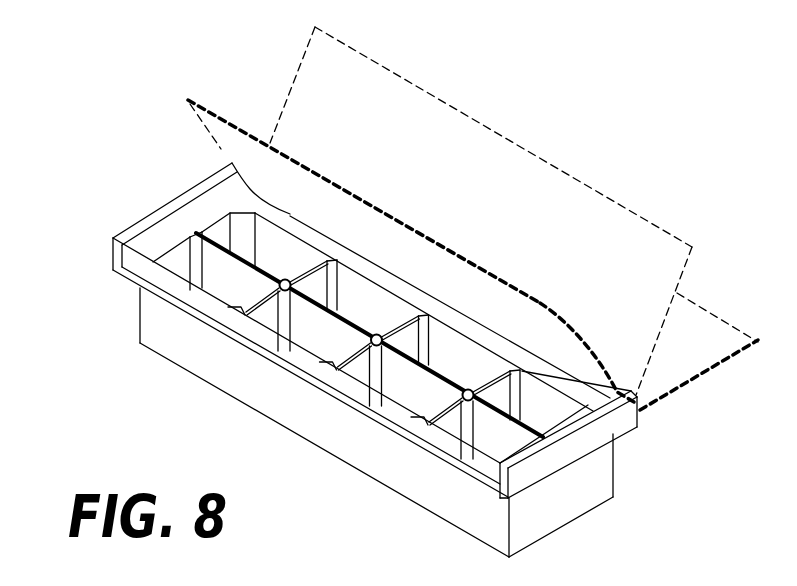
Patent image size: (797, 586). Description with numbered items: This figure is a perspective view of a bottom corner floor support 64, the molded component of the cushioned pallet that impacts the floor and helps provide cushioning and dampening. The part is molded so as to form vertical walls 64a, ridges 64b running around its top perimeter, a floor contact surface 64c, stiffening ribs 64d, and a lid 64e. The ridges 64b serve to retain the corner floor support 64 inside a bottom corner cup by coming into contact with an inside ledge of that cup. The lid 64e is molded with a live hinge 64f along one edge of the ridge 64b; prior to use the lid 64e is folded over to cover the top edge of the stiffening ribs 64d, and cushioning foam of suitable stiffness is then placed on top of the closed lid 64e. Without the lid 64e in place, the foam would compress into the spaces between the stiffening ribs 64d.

The bottom corner floor support 64 is at (151, 395).
The vertical walls 64a is at (613, 485).
The ridges 64b is at (462, 328).
The floor contact surface 64c is at (232, 394).
The stiffening ribs 64d is at (527, 430).
The lid 64e is at (472, 119).
The live hinge 64f is at (300, 215).